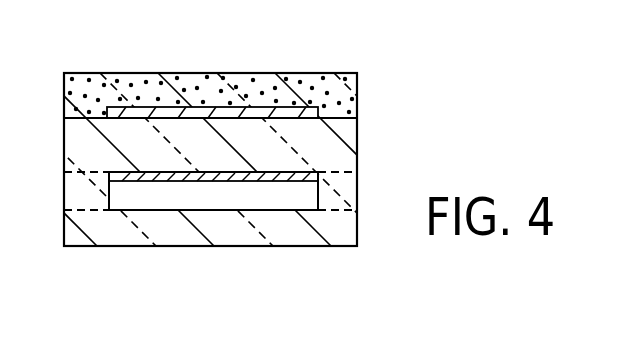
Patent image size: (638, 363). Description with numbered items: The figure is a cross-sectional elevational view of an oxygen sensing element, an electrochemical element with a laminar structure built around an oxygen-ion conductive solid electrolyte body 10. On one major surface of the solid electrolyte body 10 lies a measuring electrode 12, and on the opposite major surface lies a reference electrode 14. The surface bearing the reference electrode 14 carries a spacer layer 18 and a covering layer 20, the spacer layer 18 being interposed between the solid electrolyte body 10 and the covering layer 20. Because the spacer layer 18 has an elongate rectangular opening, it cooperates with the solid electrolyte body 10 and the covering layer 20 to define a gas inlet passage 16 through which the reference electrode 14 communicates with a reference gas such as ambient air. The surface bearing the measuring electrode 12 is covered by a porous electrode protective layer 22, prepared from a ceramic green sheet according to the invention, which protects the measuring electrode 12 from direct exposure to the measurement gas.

The oxygen-ion conductive solid electrolyte body 10 is at (335, 142).
The measuring electrode 12 is at (198, 107).
The reference electrode 14 is at (108, 174).
The gas inlet passage 16 is at (143, 200).
The spacer layer 18 is at (347, 188).
The covering layer 20 is at (345, 233).
The porous electrode protective layer 22 is at (345, 94).